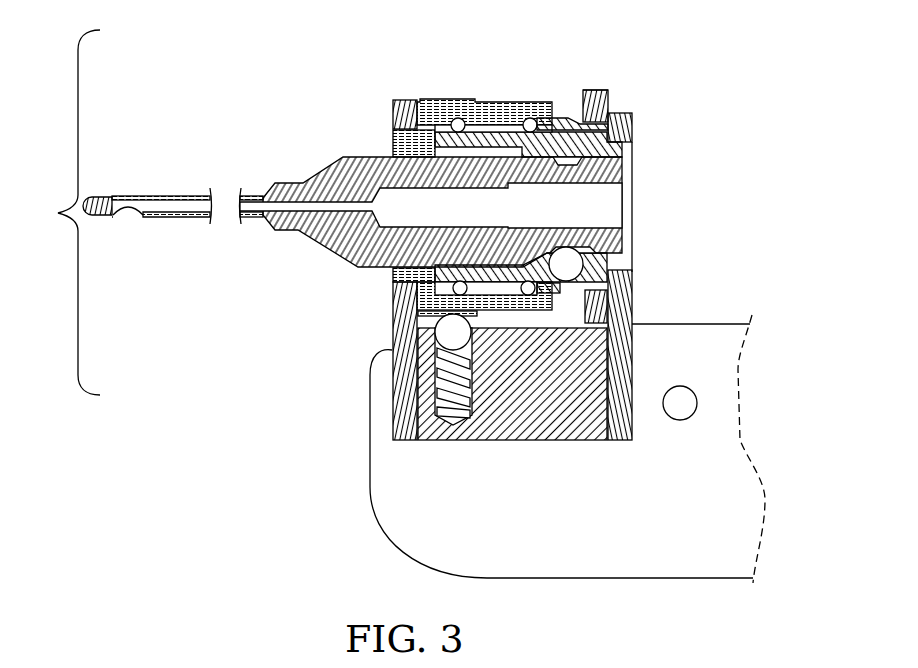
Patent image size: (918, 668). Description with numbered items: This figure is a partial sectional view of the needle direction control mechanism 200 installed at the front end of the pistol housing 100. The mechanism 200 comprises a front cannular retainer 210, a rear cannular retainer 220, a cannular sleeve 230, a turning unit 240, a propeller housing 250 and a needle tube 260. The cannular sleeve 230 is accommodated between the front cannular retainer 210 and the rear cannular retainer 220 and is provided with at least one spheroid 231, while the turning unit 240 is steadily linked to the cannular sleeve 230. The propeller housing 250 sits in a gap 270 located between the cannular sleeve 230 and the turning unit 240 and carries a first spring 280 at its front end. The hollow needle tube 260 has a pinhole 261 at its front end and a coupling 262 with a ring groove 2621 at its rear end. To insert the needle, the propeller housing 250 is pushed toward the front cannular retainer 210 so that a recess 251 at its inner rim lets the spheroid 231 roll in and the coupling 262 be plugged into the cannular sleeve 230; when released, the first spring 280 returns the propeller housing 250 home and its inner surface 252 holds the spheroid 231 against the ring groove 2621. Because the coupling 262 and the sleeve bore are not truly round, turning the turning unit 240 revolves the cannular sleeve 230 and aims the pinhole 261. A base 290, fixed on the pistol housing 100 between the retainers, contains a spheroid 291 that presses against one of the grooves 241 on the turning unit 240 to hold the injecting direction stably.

The pistol housing 100 is at (392, 500).
The direction control mechanism 200 is at (63, 212).
The front cannular retainer 210 is at (404, 112).
The rear cannular retainer 220 is at (620, 114).
The cannular sleeve 230 is at (622, 150).
The spheroid 231 is at (568, 262).
The turning unit 240 is at (523, 108).
The grooves 241 is at (418, 316).
The propeller housing 250 is at (607, 91).
The recess 251 is at (593, 94).
The inner surface 252 is at (568, 122).
The needle tube 260 is at (234, 158).
The pinhole 261 is at (128, 208).
The coupling 262 is at (302, 185).
The ring groove 2621 is at (578, 244).
The gap 270 is at (502, 118).
The first spring 280 is at (460, 117).
The base 290 is at (417, 382).
The spheroid 291 is at (452, 333).